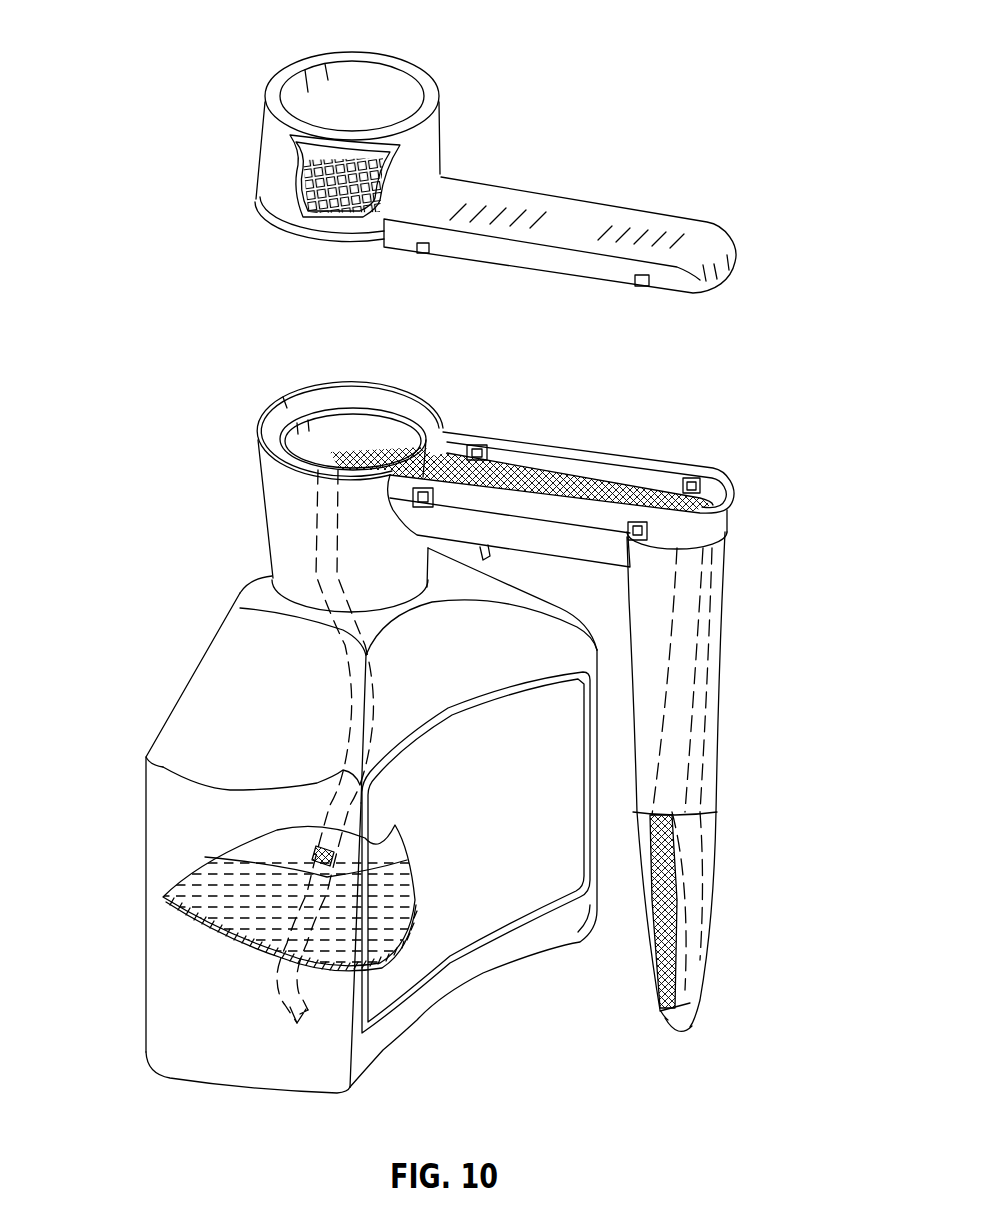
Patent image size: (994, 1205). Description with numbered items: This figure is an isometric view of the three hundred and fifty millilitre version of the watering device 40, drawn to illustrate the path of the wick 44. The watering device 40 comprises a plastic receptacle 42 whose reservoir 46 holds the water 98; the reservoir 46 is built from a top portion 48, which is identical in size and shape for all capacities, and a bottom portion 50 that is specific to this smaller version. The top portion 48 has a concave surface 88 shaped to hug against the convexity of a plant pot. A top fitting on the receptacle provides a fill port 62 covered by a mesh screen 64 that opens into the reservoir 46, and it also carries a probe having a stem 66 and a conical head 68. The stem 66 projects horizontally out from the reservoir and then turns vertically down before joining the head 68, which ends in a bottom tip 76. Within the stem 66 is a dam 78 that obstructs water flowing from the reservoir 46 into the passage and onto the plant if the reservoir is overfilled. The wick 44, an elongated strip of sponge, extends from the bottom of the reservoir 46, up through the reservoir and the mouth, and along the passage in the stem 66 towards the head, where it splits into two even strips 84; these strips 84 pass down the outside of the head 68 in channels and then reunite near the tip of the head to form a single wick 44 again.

The watering device 40 is at (243, 505).
The receptacle 42 is at (146, 803).
The wick 44 is at (627, 480).
The reservoir 46 is at (283, 851).
The top portion 48 is at (190, 682).
The bottom portion 50 is at (287, 1094).
The fill port 62 is at (333, 52).
The mesh screen 64 is at (297, 202).
The stem 66 is at (550, 447).
The conical head 68 is at (720, 830).
The bottom tip 76 is at (693, 1035).
The dam 78 is at (450, 423).
The strips 84 is at (703, 863).
The concave surface 88 is at (457, 893).
The water 98 is at (243, 918).